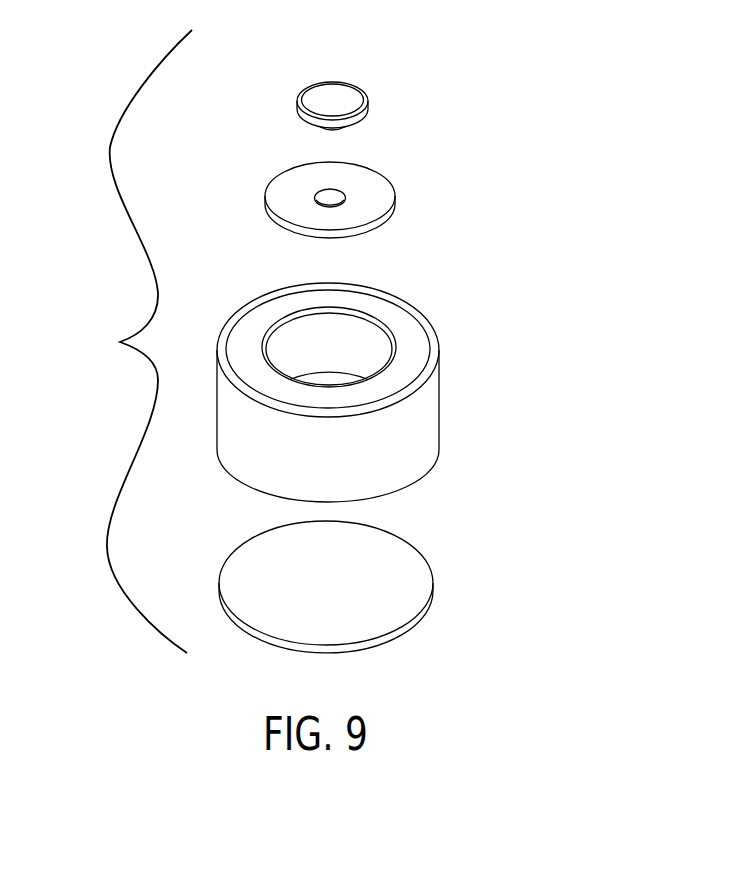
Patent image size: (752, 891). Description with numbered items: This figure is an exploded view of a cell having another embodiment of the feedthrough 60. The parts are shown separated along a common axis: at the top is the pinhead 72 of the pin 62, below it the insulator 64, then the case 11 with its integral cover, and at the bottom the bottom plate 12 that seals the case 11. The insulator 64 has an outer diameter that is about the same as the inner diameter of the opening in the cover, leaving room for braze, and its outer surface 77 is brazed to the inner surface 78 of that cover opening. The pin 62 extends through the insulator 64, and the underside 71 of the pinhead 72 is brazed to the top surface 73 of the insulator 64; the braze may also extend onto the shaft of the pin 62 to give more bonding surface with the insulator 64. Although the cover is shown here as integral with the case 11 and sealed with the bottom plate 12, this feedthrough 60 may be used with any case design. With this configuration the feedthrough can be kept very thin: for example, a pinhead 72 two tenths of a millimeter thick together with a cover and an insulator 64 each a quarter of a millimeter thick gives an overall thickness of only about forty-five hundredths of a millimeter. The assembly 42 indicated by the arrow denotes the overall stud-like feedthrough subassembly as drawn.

The feedthrough 60 is at (138, 341).
The stud assembly 42 is at (397, 77).
The pinhead 72 is at (340, 83).
The pin 62 is at (343, 126).
The underside of the pinhead 71 is at (306, 125).
The insulator 64 is at (396, 189).
The outer surface of the insulator 77 is at (382, 222).
The top surface of insulator 73 is at (293, 203).
The case 11 is at (438, 410).
The inner surface of the opening of the cover 78 is at (356, 325).
The bottom plate 12 is at (413, 622).